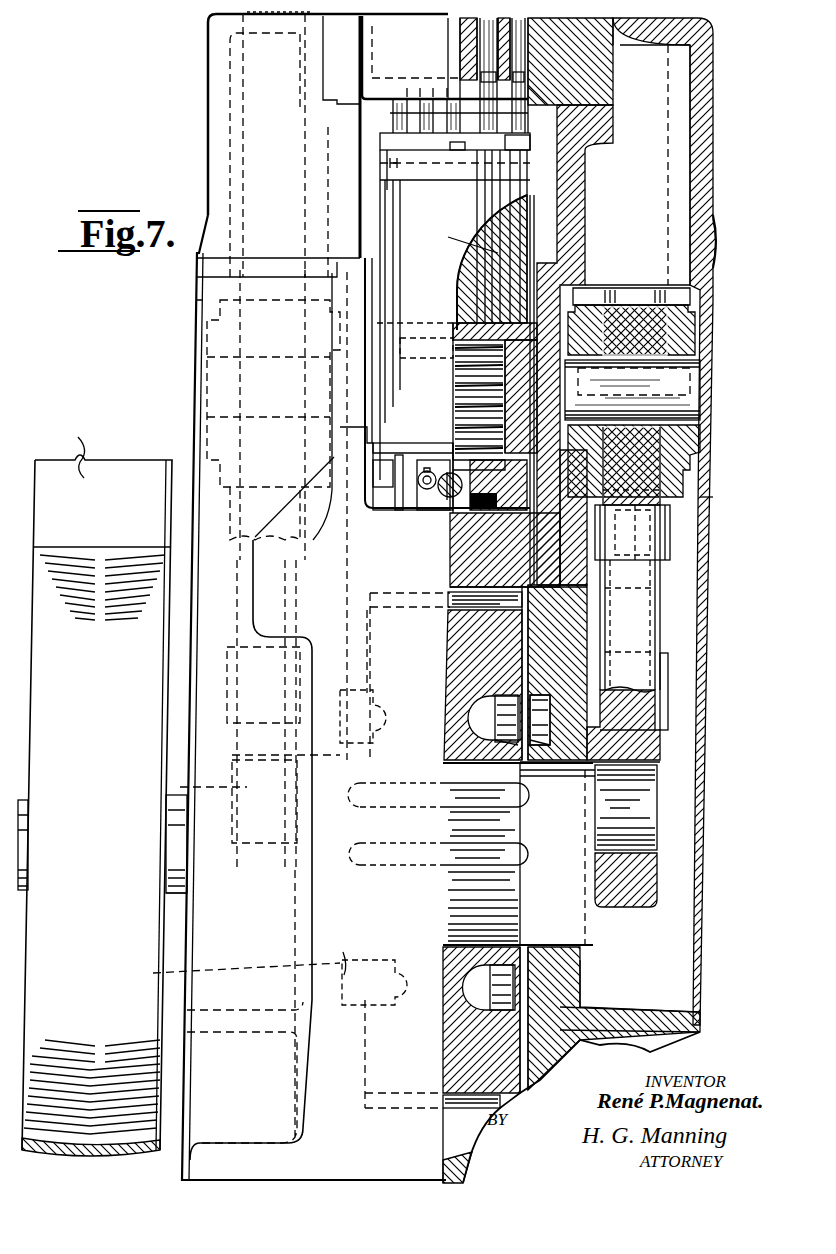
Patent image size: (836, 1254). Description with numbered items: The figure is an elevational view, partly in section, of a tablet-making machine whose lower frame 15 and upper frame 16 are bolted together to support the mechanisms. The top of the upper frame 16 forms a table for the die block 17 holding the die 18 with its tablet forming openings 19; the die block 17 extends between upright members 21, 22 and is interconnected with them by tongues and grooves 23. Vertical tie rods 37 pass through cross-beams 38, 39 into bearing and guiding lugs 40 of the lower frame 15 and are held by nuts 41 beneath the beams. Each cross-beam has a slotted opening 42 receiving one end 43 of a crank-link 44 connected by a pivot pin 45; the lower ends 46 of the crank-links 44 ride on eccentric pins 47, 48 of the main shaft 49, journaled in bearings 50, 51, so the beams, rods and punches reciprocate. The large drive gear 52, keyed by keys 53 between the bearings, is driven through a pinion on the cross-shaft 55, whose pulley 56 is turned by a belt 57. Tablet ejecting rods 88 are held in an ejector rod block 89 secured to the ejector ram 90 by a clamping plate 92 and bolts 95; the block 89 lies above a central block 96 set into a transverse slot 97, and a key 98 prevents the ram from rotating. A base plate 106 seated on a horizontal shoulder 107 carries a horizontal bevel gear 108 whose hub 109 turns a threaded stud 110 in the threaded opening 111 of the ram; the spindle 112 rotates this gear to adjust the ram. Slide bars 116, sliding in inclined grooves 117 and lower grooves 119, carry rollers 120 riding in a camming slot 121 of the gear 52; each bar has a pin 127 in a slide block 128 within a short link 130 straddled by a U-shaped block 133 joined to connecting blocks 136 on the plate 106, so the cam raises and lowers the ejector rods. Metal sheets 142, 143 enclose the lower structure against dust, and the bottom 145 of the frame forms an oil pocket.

The lower frame 15 is at (700, 1025).
The upper frame 16 is at (700, 230).
The die block 17 is at (537, 72).
The die 18 is at (547, 77).
The tablet forming openings 19 is at (462, 48).
The upright member 21 is at (218, 161).
The upright member 22 is at (577, 193).
The tongues and grooves 23 is at (327, 100).
The vertical tie rods 37 is at (670, 127).
The cross-beam 38 is at (242, 437).
The cross-beam 39 is at (703, 452).
The bearing and guiding lugs 40 is at (660, 683).
The nuts 41 is at (670, 525).
The slotted opening 42 is at (663, 470).
The end of crank-link 43 is at (650, 338).
The crank-links 44 is at (642, 613).
The pivot pins 45 is at (690, 390).
The lower ends of crank-links 46 is at (660, 747).
The eccentric pin 47 is at (197, 790).
The eccentric pin 48 is at (647, 800).
The main shaft 49 is at (580, 877).
The bearing 50 is at (282, 1015).
The bearing 51 is at (580, 962).
The large drive gear 52 is at (493, 1037).
The keys 53 is at (475, 855).
The cross-shaft 55 is at (172, 893).
The pulley 56 is at (97, 805).
The belt 57 is at (68, 452).
The tablet ejecting rods 88 is at (493, 113).
The ejector rod block 89 is at (517, 143).
The ejector ram 90 is at (395, 212).
The clamping plate 92 is at (395, 166).
The bolts 95 is at (380, 144).
The central block 96 is at (510, 230).
The transverse slot 97 is at (462, 308).
The key 98 is at (573, 287).
The base plate 106 is at (452, 520).
The horizontal shoulder 107 is at (417, 513).
The horizontal bevel gear 108 is at (462, 545).
The hub 109 is at (455, 440).
The threaded stud 110 is at (462, 415).
The threaded opening 111 is at (455, 388).
The spindle 112 is at (440, 493).
The slide bars 116 is at (380, 303).
The inclined grooves 117 is at (458, 239).
The grooves 119 is at (452, 648).
The rollers 120 is at (493, 700).
The camming slot 121 is at (473, 755).
The pin 127 is at (380, 463).
The slide block 128 is at (380, 480).
The short link 130 is at (380, 510).
The U-shaped block 133 is at (380, 447).
The connecting blocks 136 is at (410, 505).
The metal sheet 142 is at (245, 408).
The metal sheet 143 is at (710, 505).
The bottom 145 is at (440, 1143).